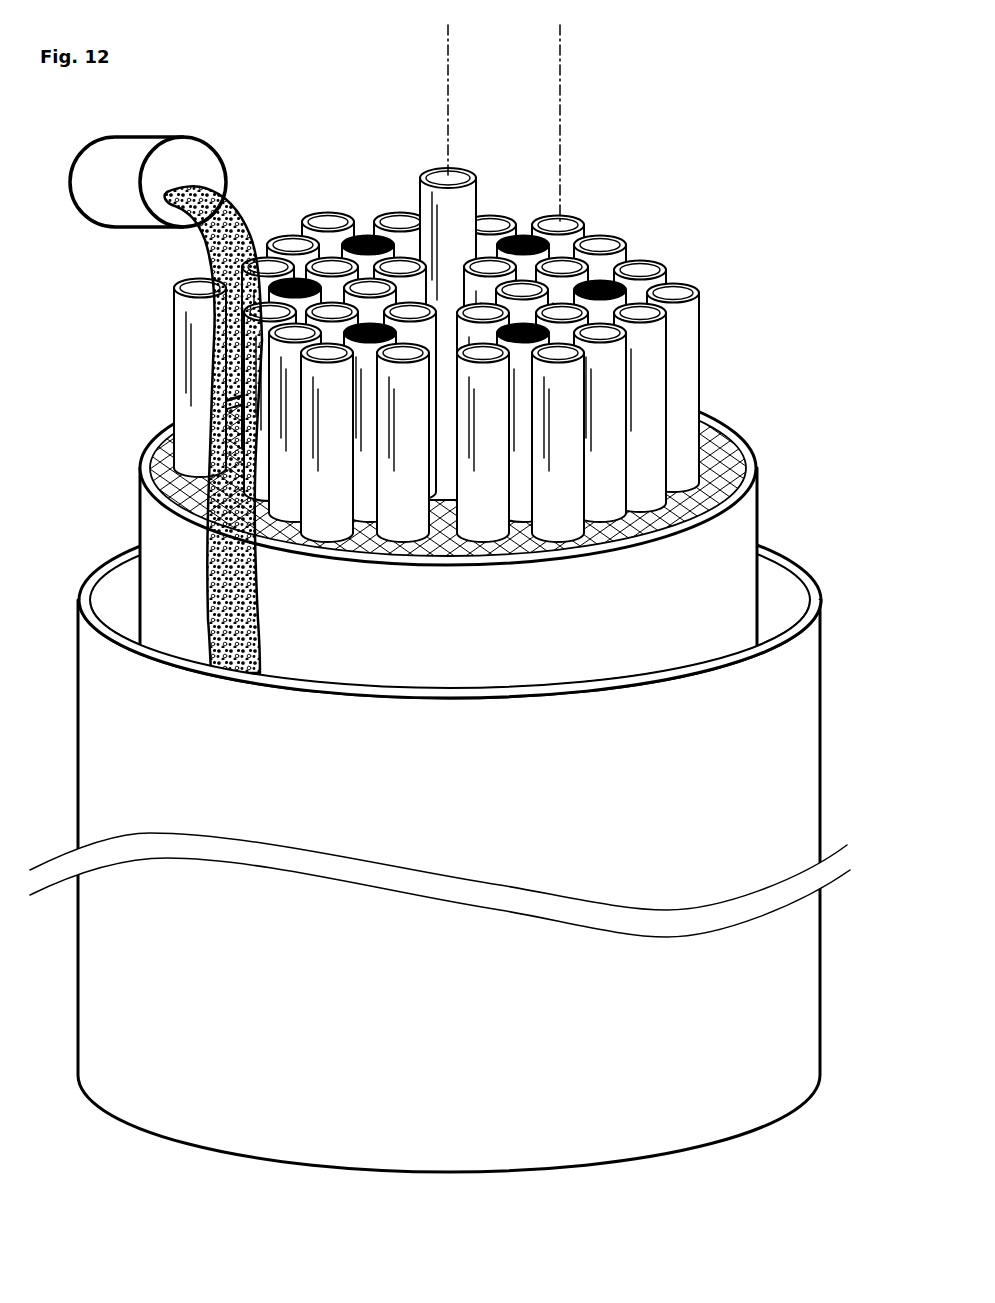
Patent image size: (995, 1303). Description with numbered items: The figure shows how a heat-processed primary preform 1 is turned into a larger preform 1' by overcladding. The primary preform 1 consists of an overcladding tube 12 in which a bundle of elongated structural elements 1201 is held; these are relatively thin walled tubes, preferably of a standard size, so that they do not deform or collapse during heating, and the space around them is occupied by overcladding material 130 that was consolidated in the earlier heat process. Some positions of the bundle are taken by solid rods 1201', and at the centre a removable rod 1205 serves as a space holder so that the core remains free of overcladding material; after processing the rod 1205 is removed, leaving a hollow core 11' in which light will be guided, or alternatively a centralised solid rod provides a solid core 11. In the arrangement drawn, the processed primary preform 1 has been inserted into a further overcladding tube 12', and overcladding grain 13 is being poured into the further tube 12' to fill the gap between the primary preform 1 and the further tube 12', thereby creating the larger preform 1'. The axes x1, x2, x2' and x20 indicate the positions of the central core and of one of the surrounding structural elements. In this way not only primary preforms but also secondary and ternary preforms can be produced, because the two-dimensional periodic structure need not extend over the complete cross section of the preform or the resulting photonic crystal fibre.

The preform 1 is at (501, 312).
The preform 1' is at (475, 515).
The solid core 11 is at (387, 297).
The hollow core 11' is at (387, 297).
The removable rod 1205 is at (412, 180).
The elongated structural elements 1201 is at (501, 318).
The solid rod 1201' is at (362, 294).
The overcladding tube 12 is at (475, 515).
The further overcladding tube 12' is at (449, 812).
The overcladding grain 13 is at (242, 617).
The overcladding material 130 is at (727, 455).
The axis x1 is at (499, 101).
The axis x2 is at (499, 101).
The axis x2' is at (499, 101).
The axis x20 is at (582, 125).